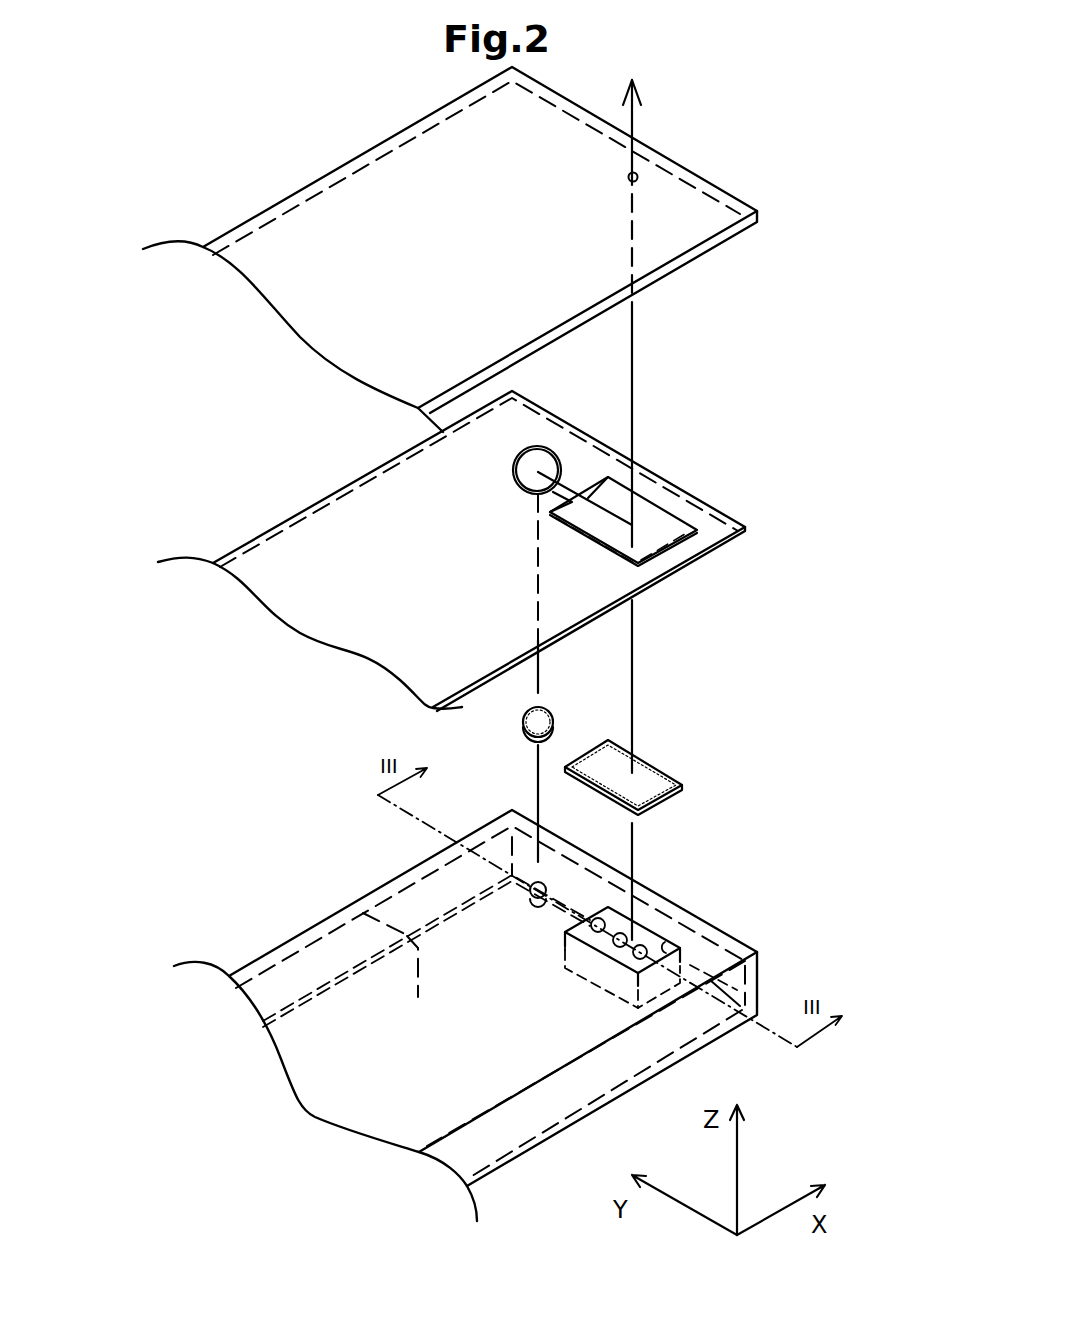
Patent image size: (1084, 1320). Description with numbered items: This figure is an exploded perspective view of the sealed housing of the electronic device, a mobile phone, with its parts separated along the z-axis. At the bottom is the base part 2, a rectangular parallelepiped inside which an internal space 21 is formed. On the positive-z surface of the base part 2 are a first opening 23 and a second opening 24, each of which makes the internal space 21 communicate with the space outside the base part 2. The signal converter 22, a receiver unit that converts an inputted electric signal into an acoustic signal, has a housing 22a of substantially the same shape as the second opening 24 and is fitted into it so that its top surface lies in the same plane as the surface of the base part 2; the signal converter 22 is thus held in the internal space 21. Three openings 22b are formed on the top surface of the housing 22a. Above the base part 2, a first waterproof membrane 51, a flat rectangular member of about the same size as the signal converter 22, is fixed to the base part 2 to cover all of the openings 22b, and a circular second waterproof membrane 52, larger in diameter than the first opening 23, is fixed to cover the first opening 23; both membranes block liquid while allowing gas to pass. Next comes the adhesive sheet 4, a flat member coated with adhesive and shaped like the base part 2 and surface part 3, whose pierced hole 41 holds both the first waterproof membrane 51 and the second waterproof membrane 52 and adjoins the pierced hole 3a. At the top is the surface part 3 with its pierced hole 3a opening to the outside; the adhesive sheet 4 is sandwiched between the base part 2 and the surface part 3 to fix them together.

The base part 2 is at (294, 938).
The internal space 21 is at (363, 913).
The signal converter 22 is at (643, 925).
The housing 22a is at (655, 943).
The openings 22b is at (582, 938).
The first opening 23 is at (529, 897).
The second opening 24 is at (667, 950).
The surface part 3 is at (708, 177).
The pierced hole 3a is at (637, 177).
The adhesive sheet 4 is at (715, 512).
The pierced hole 41 is at (648, 512).
The first waterproof membrane 51 is at (660, 770).
The second waterproof membrane 52 is at (548, 710).